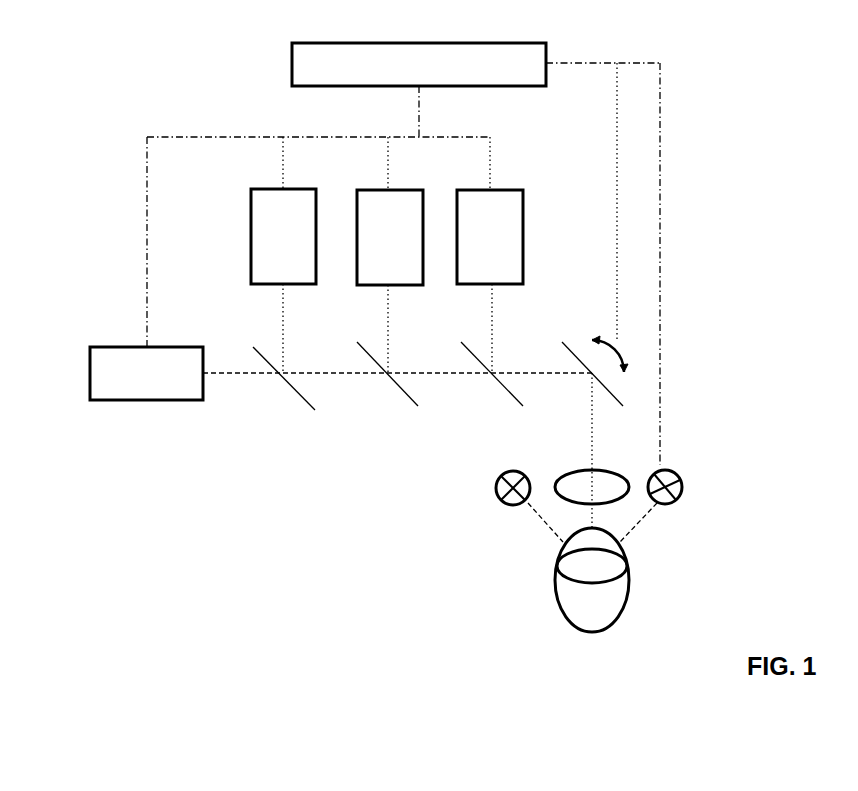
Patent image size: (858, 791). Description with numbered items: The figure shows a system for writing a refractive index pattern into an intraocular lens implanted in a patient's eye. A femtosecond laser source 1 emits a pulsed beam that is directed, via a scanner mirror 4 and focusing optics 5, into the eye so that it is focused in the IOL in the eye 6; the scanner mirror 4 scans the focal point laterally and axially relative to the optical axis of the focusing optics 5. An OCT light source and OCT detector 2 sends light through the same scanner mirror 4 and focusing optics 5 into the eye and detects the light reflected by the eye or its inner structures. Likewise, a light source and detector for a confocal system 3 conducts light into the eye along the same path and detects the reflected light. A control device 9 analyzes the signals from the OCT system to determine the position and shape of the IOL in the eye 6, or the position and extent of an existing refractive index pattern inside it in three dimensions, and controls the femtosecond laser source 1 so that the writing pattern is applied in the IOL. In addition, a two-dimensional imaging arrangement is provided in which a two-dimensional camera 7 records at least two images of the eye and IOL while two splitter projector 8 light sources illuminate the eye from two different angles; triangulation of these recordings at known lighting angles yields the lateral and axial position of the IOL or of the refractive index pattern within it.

The femtosecond laser source 1 is at (507, 212).
The OCT light source and OCT detector 2 is at (387, 235).
The light source and detector for a confocal system 3 is at (130, 372).
The scanner mirror 4 is at (578, 350).
The focusing optics 5 is at (617, 473).
The IOL in the eye 6 is at (607, 567).
The 2D camera 7 is at (282, 238).
The splitter projector 8 is at (495, 478).
The control device 9 is at (455, 68).